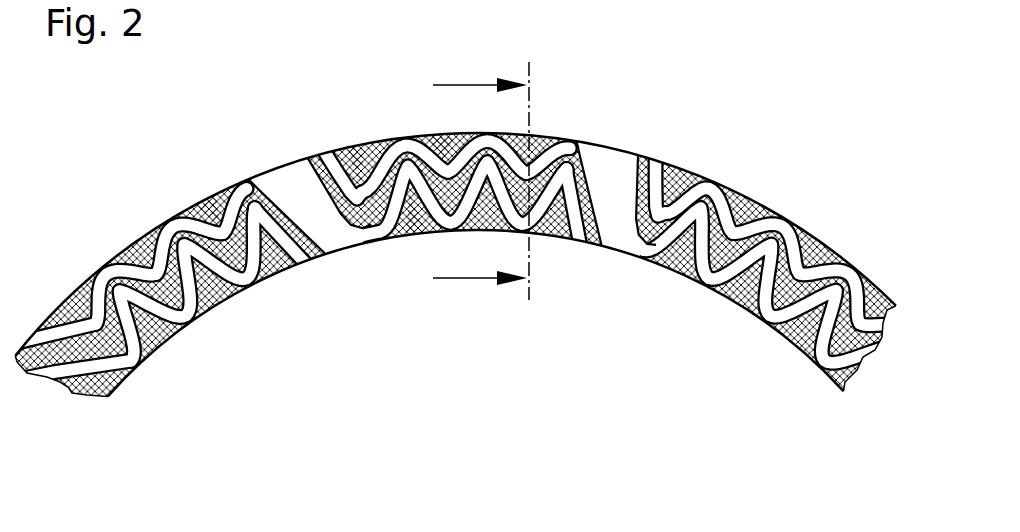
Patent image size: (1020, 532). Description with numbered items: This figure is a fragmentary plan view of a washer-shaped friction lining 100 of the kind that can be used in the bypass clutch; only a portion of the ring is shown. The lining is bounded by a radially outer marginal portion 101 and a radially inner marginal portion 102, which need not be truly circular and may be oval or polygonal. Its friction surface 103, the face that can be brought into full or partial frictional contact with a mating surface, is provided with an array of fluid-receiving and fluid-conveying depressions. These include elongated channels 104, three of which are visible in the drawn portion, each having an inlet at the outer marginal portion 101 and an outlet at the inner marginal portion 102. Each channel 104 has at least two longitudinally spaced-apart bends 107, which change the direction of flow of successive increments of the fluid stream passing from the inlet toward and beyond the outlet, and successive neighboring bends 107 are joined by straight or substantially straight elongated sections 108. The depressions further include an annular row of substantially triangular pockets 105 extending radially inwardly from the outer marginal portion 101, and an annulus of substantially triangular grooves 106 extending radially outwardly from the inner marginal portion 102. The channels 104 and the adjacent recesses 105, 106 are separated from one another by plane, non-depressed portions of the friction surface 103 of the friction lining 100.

The friction lining 100 is at (196, 134).
The radially outer marginal portion 101 is at (63, 293).
The radially inner marginal portion 102 is at (112, 392).
The friction surface 103 is at (297, 185).
The channels 104 is at (172, 222).
The triangular recesses or pockets 105 is at (445, 150).
The triangular recesses or grooves 106 is at (417, 235).
The bends 107 is at (110, 277).
The straight elongated portions or sections 108 is at (362, 160).